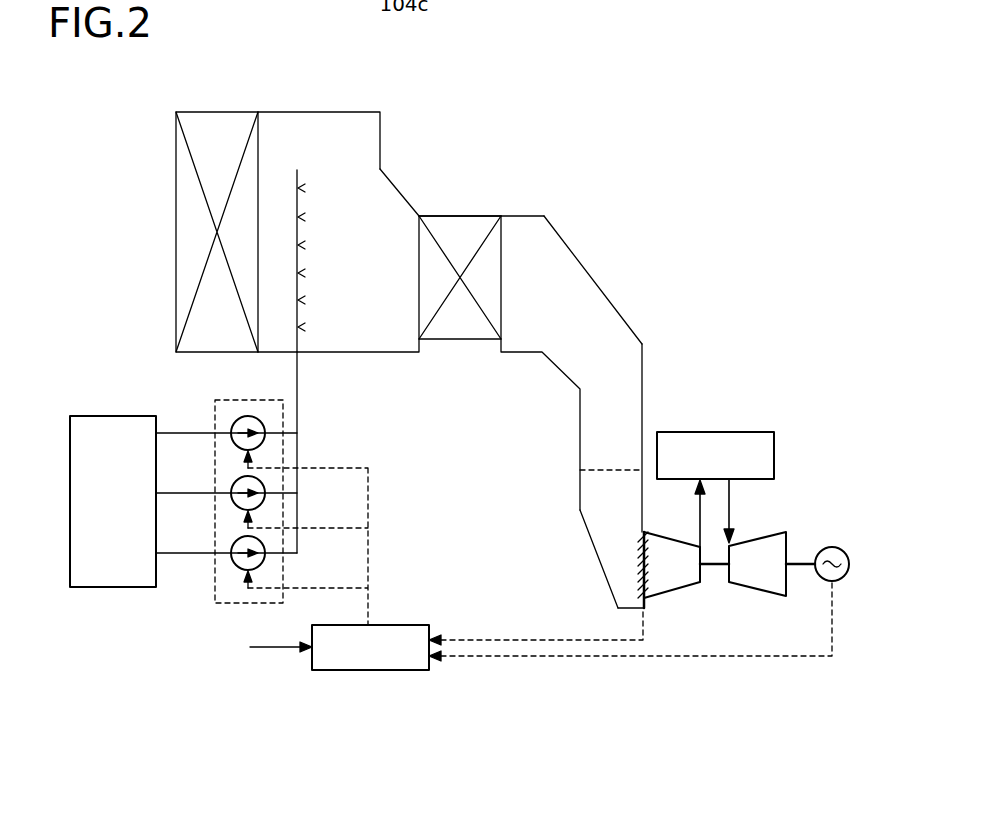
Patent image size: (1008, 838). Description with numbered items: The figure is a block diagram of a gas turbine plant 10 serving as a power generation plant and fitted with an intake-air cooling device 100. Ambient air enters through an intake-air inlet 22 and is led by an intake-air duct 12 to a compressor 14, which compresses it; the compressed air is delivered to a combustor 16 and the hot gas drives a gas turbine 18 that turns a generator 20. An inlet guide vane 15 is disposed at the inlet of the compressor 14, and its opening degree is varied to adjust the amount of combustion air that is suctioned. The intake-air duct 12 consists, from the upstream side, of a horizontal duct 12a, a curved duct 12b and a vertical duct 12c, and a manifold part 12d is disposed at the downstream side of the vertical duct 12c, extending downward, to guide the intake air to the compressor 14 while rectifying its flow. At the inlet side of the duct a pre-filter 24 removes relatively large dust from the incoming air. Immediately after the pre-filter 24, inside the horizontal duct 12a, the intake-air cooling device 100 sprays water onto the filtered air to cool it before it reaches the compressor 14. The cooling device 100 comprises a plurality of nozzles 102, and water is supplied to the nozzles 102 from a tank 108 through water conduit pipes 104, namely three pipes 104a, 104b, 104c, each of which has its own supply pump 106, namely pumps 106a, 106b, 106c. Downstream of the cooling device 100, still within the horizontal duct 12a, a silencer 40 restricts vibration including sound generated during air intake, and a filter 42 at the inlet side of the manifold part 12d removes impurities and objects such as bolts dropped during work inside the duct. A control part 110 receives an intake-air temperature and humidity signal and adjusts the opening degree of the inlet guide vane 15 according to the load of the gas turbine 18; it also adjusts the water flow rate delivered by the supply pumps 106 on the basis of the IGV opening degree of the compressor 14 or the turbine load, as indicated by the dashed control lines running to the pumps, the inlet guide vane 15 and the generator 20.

The gas turbine plant 10 is at (686, 205).
The intake-air duct 12 is at (489, 360).
The horizontal duct 12a is at (401, 195).
The curved duct 12b is at (597, 282).
The vertical duct 12c is at (645, 407).
The manifold part 12d is at (600, 566).
The compressor 14 is at (670, 591).
The inlet guide vane 15 is at (640, 543).
The combustor 16 is at (737, 432).
The gas turbine 18 is at (751, 591).
The generator 20 is at (832, 546).
The intake-air inlet 22 is at (176, 166).
The pre-filter 24 is at (203, 117).
The silencer 40 is at (459, 222).
The filter 42 is at (600, 470).
The intake-air cooling device 100 is at (303, 170).
The nozzles 102 is at (312, 189).
The water conduit pipes 104 is at (300, 378).
The water conduit pipe 104a is at (183, 496).
The water conduit pipe 104b is at (183, 436).
The water conduit pipe 104c is at (183, 556).
The supply pumps 106 is at (228, 399).
The supply pump 106a is at (260, 484).
The supply pump 106b is at (260, 424).
The supply pump 106c is at (260, 544).
The tank 108 is at (100, 416).
The control part 110 is at (403, 625).